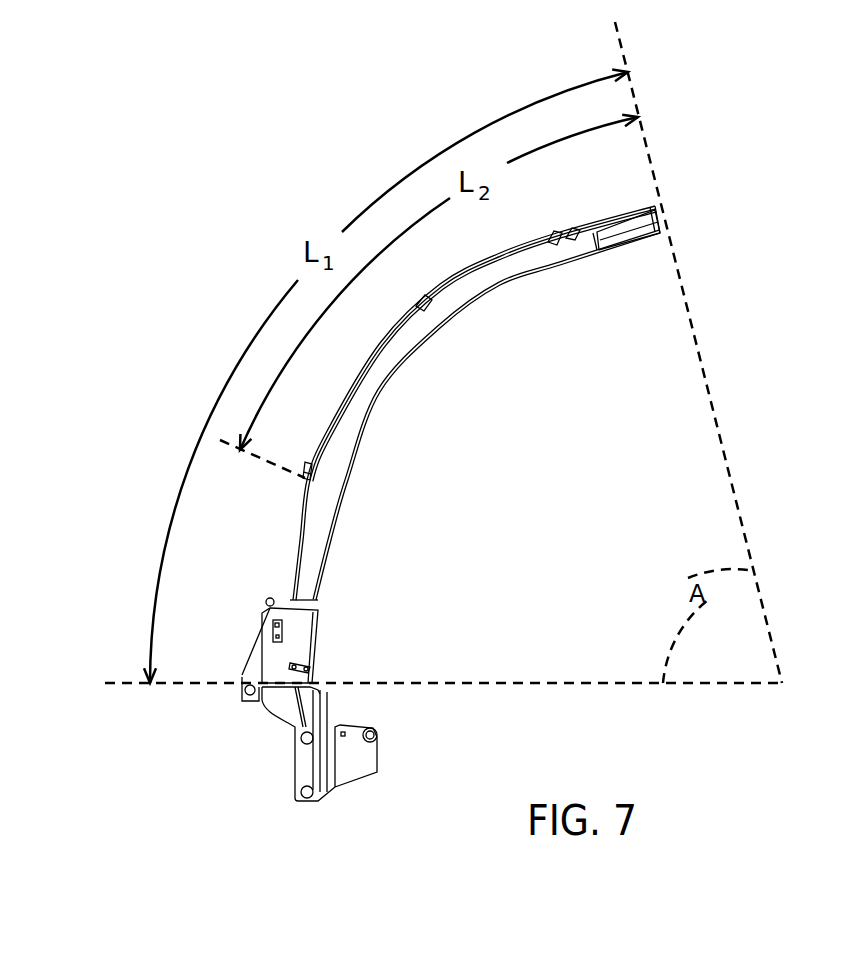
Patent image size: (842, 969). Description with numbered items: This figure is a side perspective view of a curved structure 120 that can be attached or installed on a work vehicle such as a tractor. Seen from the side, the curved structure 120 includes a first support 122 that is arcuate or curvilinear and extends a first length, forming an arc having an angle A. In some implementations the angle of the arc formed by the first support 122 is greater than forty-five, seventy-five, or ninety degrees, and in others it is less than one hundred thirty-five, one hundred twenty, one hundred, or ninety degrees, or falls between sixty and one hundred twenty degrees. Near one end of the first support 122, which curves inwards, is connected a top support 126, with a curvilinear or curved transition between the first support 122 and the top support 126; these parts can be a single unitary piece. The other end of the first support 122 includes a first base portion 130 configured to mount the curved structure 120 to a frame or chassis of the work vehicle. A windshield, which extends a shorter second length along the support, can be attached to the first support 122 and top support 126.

The curved structure 120 is at (318, 150).
The first support 122 is at (417, 337).
The top support 126 is at (665, 217).
The first base portion 130 is at (283, 707).